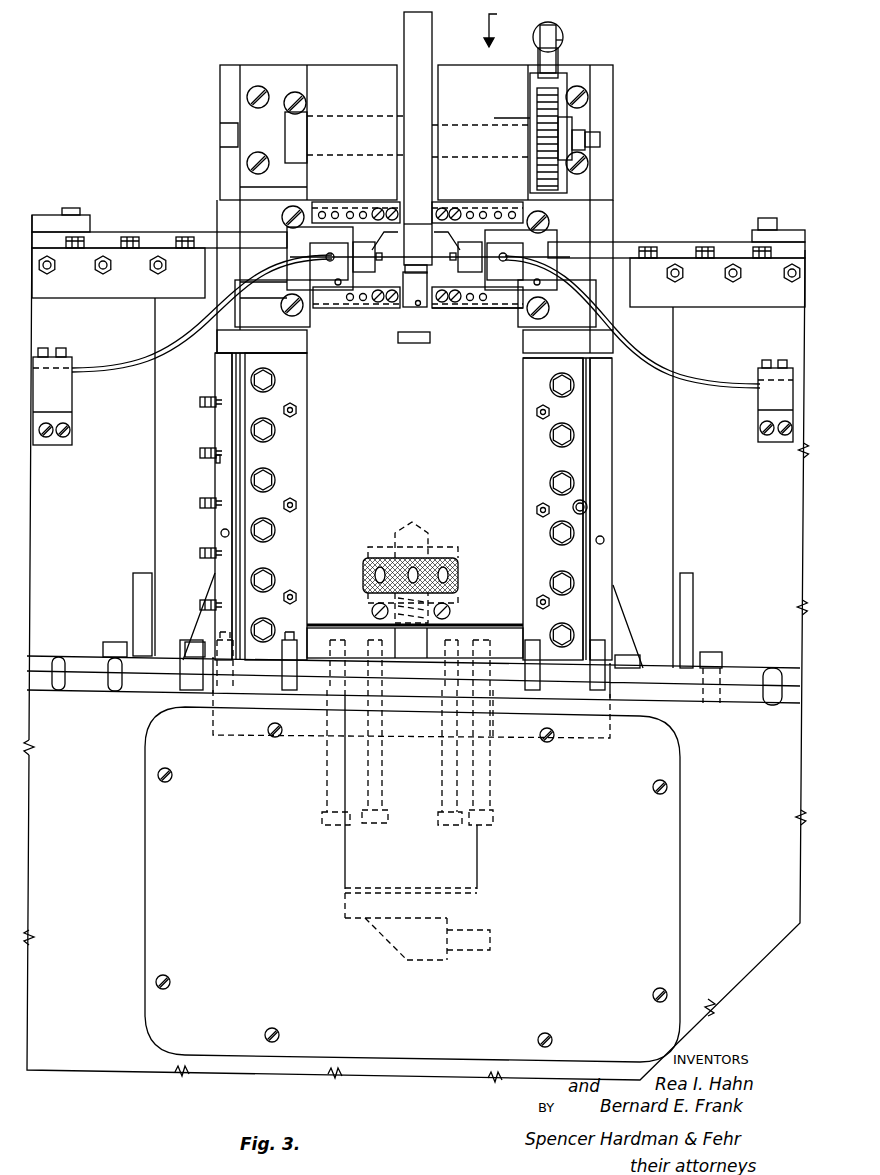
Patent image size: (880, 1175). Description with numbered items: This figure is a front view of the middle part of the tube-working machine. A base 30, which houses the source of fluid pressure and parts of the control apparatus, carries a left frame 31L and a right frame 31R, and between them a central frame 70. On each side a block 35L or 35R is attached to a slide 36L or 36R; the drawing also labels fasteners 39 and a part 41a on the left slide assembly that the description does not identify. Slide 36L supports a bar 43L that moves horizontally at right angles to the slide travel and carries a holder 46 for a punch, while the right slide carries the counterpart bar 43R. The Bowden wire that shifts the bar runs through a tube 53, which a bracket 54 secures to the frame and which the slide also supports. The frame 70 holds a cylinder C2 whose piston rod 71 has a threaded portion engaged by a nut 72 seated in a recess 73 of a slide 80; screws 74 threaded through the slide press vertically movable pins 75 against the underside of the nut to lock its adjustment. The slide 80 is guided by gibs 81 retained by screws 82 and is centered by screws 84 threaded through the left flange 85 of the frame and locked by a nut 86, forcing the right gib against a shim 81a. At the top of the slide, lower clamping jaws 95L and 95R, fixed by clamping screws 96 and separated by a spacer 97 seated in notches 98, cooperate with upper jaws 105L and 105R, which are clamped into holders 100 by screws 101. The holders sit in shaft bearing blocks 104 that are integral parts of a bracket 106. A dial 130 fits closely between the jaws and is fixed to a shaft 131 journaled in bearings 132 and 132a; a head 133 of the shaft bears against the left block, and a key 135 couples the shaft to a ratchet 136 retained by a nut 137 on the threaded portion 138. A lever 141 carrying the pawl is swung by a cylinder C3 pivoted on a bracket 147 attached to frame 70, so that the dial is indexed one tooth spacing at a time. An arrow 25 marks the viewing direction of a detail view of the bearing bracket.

The feed mechanism 25 is at (506, 28).
The base 30 is at (95, 1064).
The frame 31L is at (90, 645).
The frame 31R is at (790, 653).
The block 35L is at (50, 215).
The block 35R is at (790, 230).
The slide 36L is at (212, 242).
The slide 36R is at (622, 245).
The nuts 39 is at (136, 237).
The clamp block 41a is at (105, 273).
The bar 43L is at (366, 292).
The bar 43R is at (470, 259).
The holder 46 is at (365, 273).
The tube 53 is at (123, 373).
The bracket 54 is at (73, 435).
The frame 70 is at (222, 371).
The rod 71 is at (428, 648).
The nut 72 is at (440, 565).
The recess 73 is at (460, 578).
The screws 74 is at (372, 611).
The pins 75 is at (363, 597).
The slide 80 is at (318, 450).
The gib 81 is at (297, 489).
The shim 81a is at (587, 572).
The screws 82 is at (266, 530).
The screws 84 is at (200, 455).
The flange 85 is at (222, 426).
The nut 86 is at (210, 463).
The clamping jaw 95L is at (392, 277).
The clamping jaw 95R is at (442, 284).
The clamping screws 96 is at (452, 291).
The spacer 97 is at (410, 307).
The notches 98 is at (420, 310).
The holders 100 is at (343, 207).
The screws 101 is at (432, 226).
The shaft bearing blocks 104 is at (351, 73).
The upper clamping jaw 105L is at (398, 222).
The upper clamping jaw 105R is at (446, 222).
The bracket 106 is at (502, 204).
The dial 130 is at (404, 22).
The shaft 131 is at (470, 130).
The bearing 132 is at (360, 117).
The bearing 132a is at (497, 126).
The head 133 is at (285, 131).
The key 135 is at (575, 118).
The ratchet 136 is at (553, 90).
The nut 137 is at (586, 134).
The threaded portion 138 is at (600, 140).
The lever 141 is at (538, 61).
The bracket 147 is at (560, 33).
The cylinder C2 is at (492, 887).
The cylinder C3 is at (563, 43).